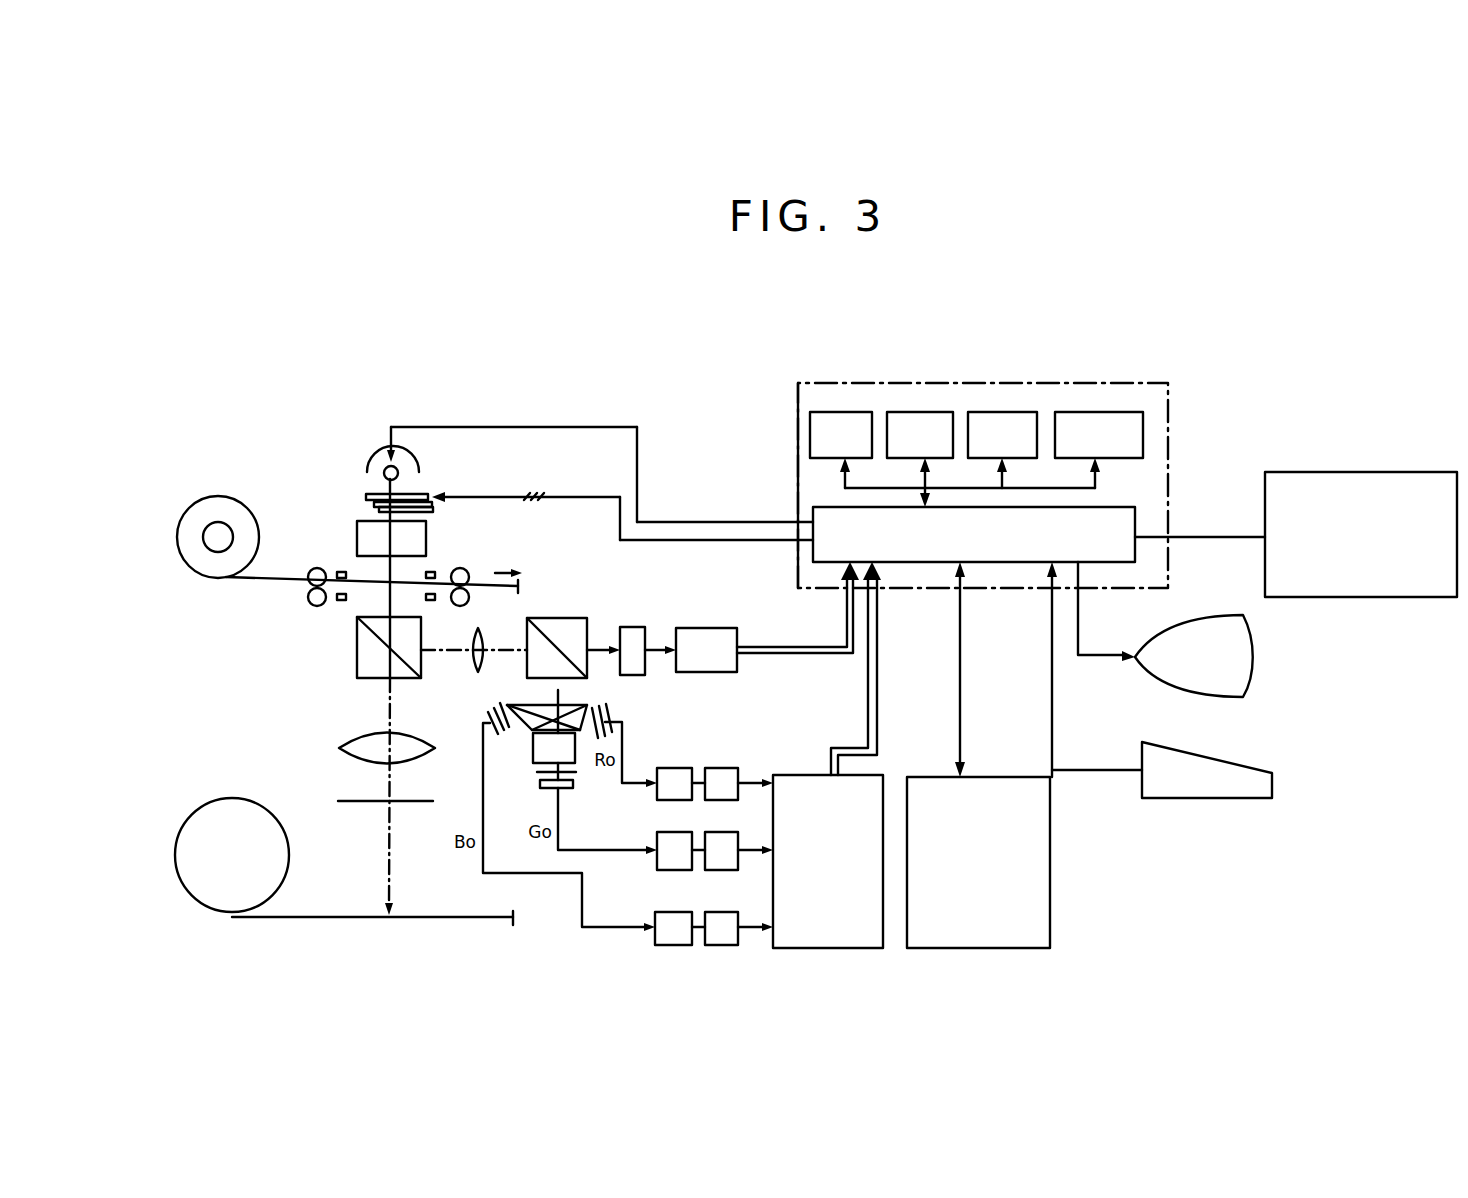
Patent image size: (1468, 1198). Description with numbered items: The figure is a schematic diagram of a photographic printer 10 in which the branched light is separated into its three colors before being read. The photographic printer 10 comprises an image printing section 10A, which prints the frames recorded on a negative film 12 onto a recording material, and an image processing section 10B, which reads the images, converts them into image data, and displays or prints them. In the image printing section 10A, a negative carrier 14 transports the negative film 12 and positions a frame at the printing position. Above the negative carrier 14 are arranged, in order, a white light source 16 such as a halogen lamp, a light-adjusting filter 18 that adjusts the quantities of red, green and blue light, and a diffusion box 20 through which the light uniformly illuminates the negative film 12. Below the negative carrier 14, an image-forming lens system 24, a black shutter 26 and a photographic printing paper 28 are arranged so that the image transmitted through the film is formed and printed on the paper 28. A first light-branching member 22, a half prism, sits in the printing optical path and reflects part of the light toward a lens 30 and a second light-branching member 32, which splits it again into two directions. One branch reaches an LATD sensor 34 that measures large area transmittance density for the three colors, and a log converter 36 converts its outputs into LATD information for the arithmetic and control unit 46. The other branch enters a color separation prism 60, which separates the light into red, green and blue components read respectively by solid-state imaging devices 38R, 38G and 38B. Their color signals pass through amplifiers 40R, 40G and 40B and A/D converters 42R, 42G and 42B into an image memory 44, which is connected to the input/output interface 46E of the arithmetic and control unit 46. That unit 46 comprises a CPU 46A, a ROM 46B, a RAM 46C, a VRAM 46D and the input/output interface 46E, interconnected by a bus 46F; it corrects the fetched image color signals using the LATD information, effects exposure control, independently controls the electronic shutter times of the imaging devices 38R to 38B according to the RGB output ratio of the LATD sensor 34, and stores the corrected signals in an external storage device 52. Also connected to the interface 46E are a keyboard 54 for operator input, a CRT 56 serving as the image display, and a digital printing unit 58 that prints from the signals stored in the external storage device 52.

The photographic printer 10 is at (414, 382).
The image printing section 10A is at (234, 711).
The image processing section 10B is at (1330, 766).
The negative film 12 is at (276, 585).
The negative carrier 14 is at (454, 558).
The white light source 16 is at (414, 450).
The light-adjusting filter 18 is at (373, 494).
The diffusion box 20 is at (355, 530).
The first light-branching member 22 is at (355, 647).
The image-forming lens system 24 is at (348, 744).
The black shutter 26 is at (356, 802).
The photographic printing paper 28 is at (366, 918).
The lens 30 is at (476, 670).
The second light-branching member 32 is at (578, 617).
The LATD sensor 34 is at (640, 625).
The log converter 36 is at (710, 627).
The solid-state imaging device 38B is at (498, 707).
The solid-state imaging device 38G is at (578, 790).
The solid-state imaging device 38R is at (612, 711).
The red amplifier 40R is at (690, 758).
The green amplifier 40G is at (660, 870).
The blue amplifier 40B is at (650, 946).
The red A/D converter 42R is at (735, 767).
The green A/D converter 42G is at (718, 870).
The blue A/D converter 42B is at (722, 946).
The image memory 44 is at (863, 948).
The arithmetic and control unit 46 is at (1052, 366).
The CPU 46A is at (836, 410).
The ROM 46B is at (925, 410).
The RAM 46C is at (1001, 410).
The VRAM 46D is at (1099, 410).
The input/output interface 46E is at (806, 510).
The bus 46F is at (1111, 488).
The external storage device 52 is at (1065, 924).
The keyboard 54 is at (1212, 800).
The CRT 56 is at (1252, 669).
The digital printing unit 58 is at (1330, 470).
The color separation prism 60 is at (520, 748).